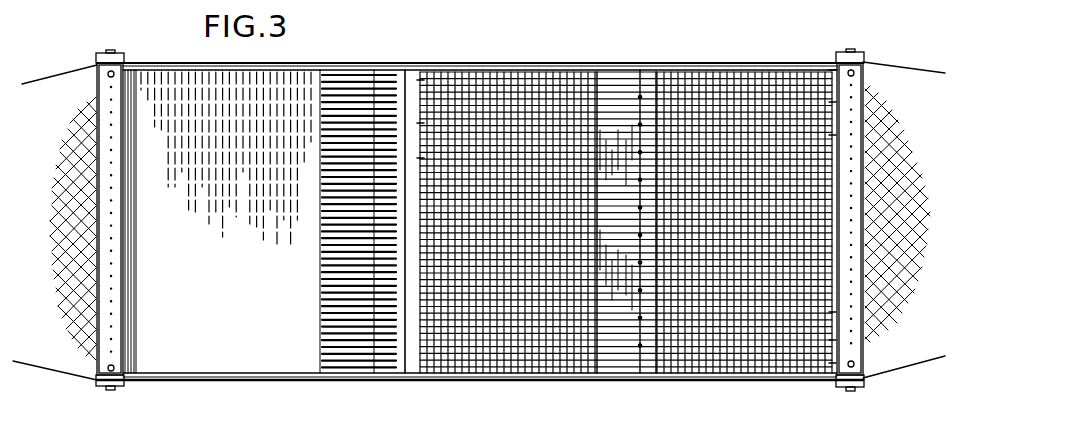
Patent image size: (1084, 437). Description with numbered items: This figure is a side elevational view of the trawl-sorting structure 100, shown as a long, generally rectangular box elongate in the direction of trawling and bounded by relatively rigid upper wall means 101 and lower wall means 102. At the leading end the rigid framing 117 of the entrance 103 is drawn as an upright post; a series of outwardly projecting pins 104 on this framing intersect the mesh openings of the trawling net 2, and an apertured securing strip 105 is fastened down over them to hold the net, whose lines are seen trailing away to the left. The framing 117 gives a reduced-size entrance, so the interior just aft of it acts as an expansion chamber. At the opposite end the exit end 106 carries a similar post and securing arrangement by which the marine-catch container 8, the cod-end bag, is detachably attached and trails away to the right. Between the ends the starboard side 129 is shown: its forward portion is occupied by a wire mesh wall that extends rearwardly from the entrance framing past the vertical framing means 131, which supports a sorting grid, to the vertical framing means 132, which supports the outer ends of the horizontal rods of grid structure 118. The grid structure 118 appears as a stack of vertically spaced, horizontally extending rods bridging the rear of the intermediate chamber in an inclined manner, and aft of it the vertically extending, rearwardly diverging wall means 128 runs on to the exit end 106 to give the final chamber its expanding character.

The trawling net 2 is at (900, 66).
The marine-catch container 8 is at (57, 74).
The structure 100 is at (594, 62).
The upper wall means 101 is at (312, 69).
The lower wall means 102 is at (278, 376).
The entrance 103 is at (862, 382).
The pins 104 is at (848, 49).
The apertured securing strips 105 is at (864, 52).
The exit end 106 is at (97, 390).
The framing 117 is at (843, 356).
The grid structure 118 is at (358, 358).
The wall means 128 is at (197, 352).
The starboard side 129 is at (522, 354).
The vertical framing means 131 is at (643, 371).
The vertical framing means 132 is at (410, 362).